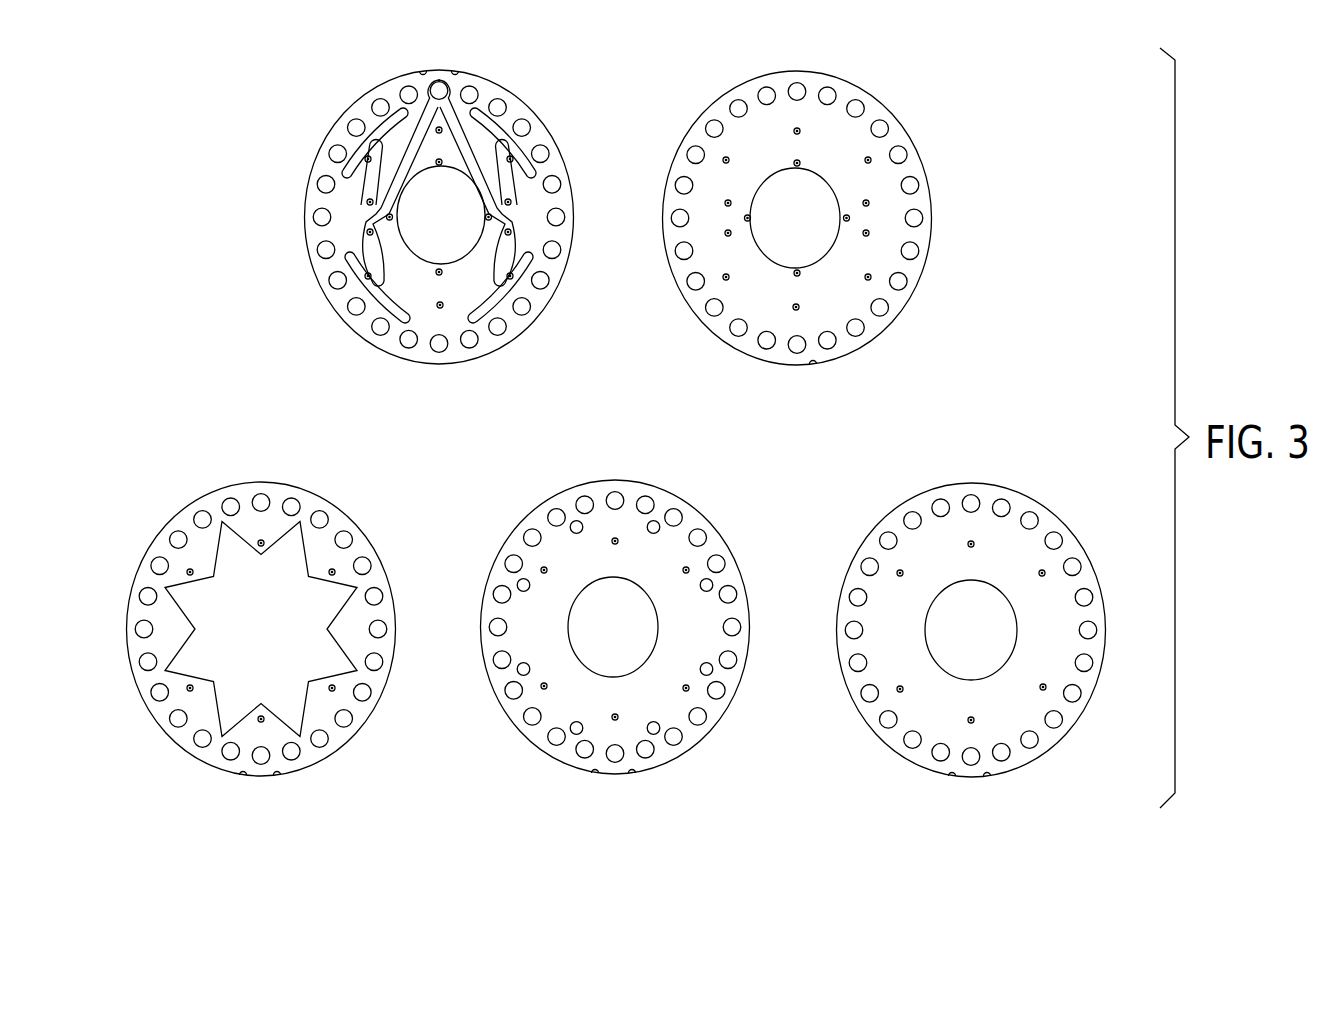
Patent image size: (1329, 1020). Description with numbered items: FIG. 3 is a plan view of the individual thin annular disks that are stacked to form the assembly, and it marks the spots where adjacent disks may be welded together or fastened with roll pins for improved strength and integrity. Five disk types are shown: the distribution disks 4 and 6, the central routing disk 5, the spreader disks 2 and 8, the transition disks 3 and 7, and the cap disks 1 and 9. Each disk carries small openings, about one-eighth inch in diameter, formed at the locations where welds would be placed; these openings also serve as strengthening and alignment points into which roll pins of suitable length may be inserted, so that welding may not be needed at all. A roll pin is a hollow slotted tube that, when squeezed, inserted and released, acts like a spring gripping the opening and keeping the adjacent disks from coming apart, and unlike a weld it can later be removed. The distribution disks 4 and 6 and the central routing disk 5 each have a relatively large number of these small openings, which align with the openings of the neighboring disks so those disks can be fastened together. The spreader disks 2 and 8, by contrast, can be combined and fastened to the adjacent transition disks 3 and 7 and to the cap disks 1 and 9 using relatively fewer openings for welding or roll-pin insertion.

The cap disk 1 is at (975, 621).
The spreader disk 2 is at (270, 626).
The transition disk 3 is at (618, 620).
The distribution disk 4 is at (450, 247).
The central routing disk 5 is at (797, 245).
The distribution disk 6 is at (450, 247).
The transition disk 7 is at (618, 620).
The spreader disk 8 is at (270, 626).
The cap disk 9 is at (975, 621).